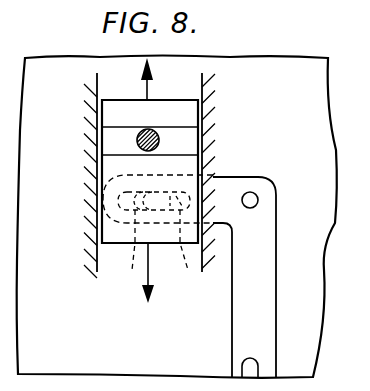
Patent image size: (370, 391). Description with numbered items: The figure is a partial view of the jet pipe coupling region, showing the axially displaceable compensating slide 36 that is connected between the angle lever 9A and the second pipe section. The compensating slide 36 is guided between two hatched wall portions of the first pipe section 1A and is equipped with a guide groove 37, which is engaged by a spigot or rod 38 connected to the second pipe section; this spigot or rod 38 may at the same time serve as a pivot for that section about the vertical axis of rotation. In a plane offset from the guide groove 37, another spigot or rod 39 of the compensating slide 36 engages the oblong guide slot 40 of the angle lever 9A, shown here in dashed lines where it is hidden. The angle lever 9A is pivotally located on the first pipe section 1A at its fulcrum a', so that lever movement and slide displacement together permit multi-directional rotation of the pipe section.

The first pipe section 1A is at (293, 73).
The compensating slide 36 is at (128, 165).
The guide groove 37 is at (188, 143).
The spigot or rod 38 is at (155, 131).
The angle lever 9A is at (265, 313).
The fulcrum a' is at (264, 174).
The spigot or rod 39 is at (133, 254).
The oblong guide slot 40 is at (188, 254).